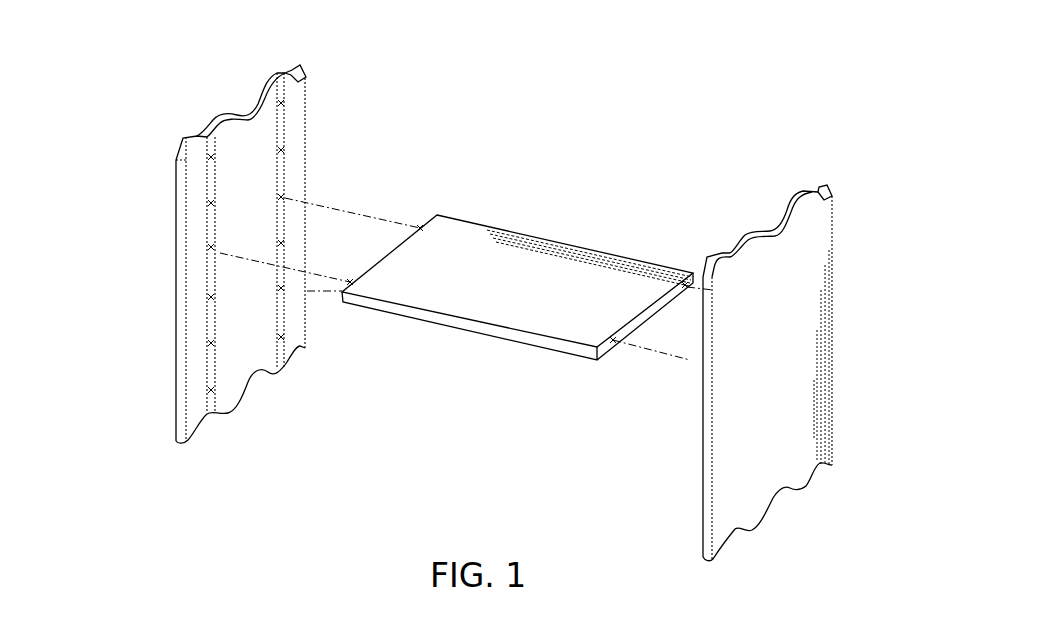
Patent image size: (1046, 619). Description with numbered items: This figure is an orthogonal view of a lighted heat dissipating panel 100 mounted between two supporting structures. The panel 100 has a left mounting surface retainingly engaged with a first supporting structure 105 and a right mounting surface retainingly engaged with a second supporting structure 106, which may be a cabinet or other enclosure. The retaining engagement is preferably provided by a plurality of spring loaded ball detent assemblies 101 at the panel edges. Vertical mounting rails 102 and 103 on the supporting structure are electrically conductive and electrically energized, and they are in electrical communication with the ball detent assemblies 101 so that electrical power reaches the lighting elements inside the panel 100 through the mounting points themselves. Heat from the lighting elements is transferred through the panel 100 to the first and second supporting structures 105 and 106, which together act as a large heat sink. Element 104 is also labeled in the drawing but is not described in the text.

The lighted heat dissipating panel 100 is at (527, 250).
The spring loaded ball detent assemblies 101 is at (420, 226).
The vertical mounting rail 102 is at (207, 128).
The vertical mounting rail 103 is at (287, 118).
The fastener marks in slot 104 is at (288, 147).
The first supporting structure 105 is at (172, 267).
The second supporting structure 106 is at (778, 201).